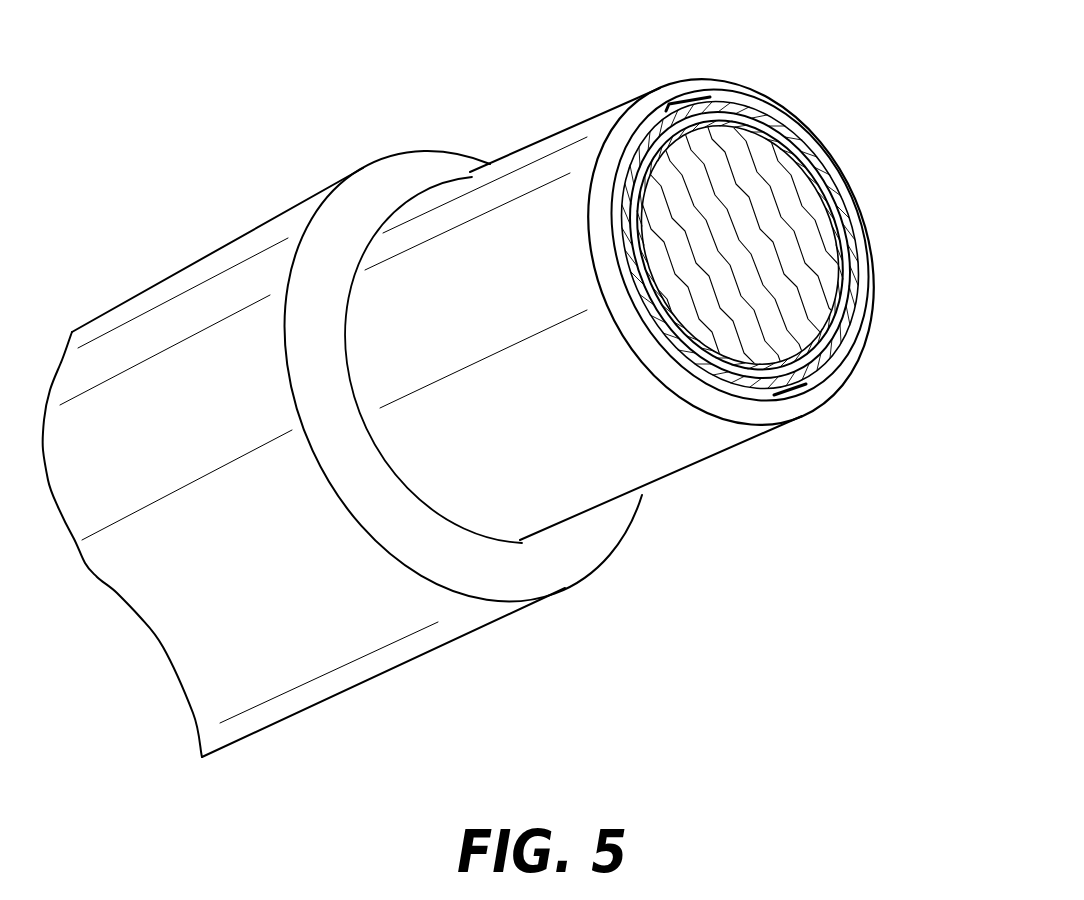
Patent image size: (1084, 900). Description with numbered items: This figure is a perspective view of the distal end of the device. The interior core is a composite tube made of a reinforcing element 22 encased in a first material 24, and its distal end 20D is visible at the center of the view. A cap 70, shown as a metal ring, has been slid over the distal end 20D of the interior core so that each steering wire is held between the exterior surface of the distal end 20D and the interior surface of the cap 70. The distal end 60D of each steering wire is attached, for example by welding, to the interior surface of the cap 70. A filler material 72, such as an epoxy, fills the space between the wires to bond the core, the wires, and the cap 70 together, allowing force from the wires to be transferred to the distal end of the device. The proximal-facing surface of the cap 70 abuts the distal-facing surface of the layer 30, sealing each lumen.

The layer 30 is at (365, 635).
The cap 70 is at (576, 130).
The filler material 72 is at (843, 337).
The distal end of steering wire 60D is at (688, 103).
The first material 24 is at (840, 277).
The reinforcing element 22 is at (833, 242).
The distal end of interior core 20D is at (800, 163).